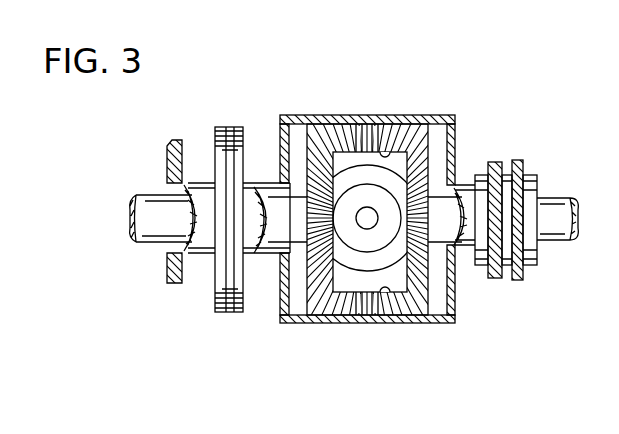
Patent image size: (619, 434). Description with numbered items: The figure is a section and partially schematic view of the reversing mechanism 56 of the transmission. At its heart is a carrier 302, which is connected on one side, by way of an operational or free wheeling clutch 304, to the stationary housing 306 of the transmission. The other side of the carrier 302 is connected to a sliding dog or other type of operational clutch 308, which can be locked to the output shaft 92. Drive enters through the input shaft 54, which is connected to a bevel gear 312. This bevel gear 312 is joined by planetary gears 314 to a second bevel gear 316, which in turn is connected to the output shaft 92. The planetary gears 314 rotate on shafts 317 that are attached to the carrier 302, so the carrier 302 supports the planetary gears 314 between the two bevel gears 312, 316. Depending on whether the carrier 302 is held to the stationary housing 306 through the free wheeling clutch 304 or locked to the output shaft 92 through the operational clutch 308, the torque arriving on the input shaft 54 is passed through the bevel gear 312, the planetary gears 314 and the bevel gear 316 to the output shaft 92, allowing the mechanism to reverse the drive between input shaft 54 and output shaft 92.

The input shaft 54 is at (140, 244).
The reversing mechanism 56 is at (380, 97).
The output shaft 92 is at (550, 245).
The carrier 302 is at (294, 324).
The free wheeling clutch 304 is at (218, 312).
The stationary housing 306 is at (167, 162).
The operational clutch 308 is at (522, 162).
The bevel gear 312 is at (280, 150).
The planetary gears 314 is at (386, 150).
The bevel gear 316 is at (452, 148).
The shafts 317 is at (345, 140).